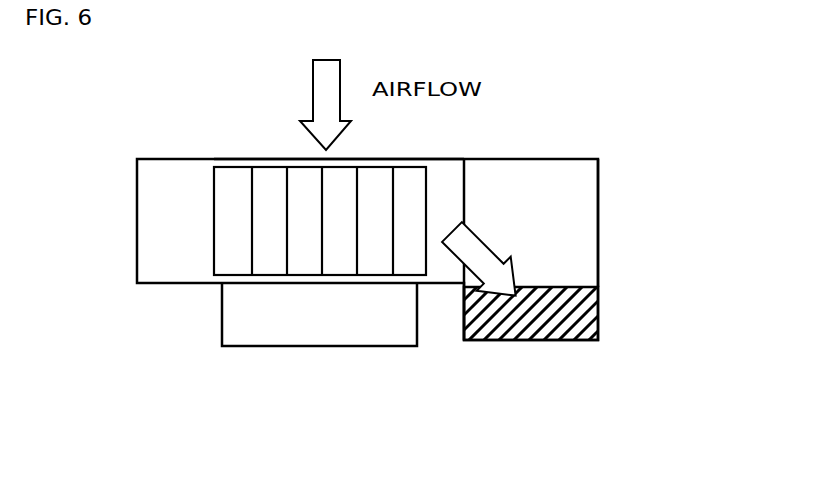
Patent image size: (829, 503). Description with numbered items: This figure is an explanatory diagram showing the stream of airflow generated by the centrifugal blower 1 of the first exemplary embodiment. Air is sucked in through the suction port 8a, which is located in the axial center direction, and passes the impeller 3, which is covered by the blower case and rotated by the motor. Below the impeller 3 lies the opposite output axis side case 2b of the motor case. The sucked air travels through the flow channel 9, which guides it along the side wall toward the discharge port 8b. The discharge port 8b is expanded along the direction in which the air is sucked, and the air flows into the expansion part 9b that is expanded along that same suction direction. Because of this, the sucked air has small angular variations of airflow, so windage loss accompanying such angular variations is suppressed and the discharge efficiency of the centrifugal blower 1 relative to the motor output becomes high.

The centrifugal blower 1 is at (180, 285).
The opposite output axis side case 2b is at (342, 347).
The impeller 3 is at (214, 187).
The suction port 8a is at (315, 156).
The discharge port 8b is at (573, 198).
The flow channel 9 is at (159, 230).
The expansion part 9b is at (550, 323).